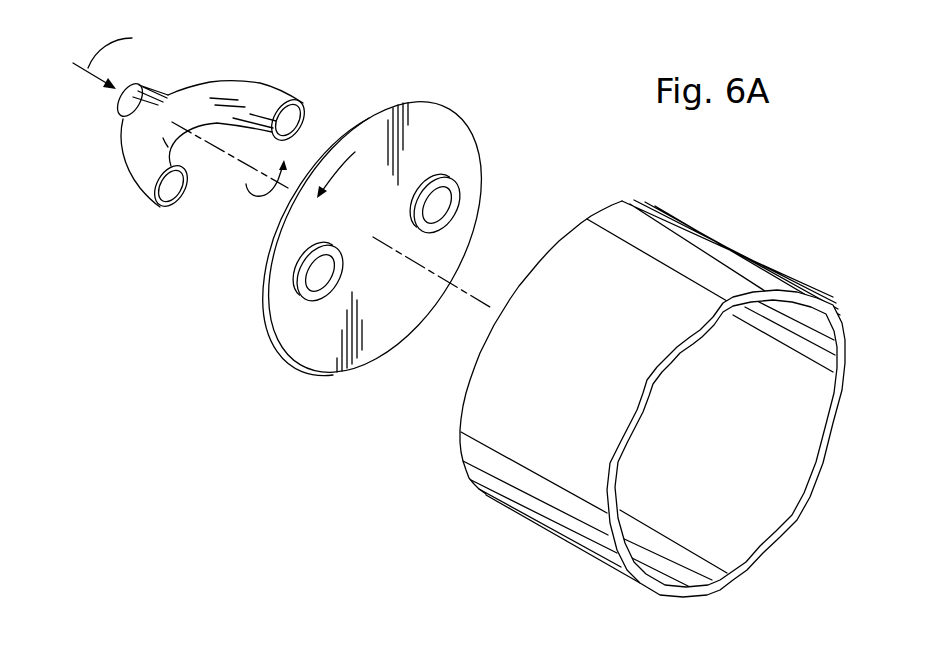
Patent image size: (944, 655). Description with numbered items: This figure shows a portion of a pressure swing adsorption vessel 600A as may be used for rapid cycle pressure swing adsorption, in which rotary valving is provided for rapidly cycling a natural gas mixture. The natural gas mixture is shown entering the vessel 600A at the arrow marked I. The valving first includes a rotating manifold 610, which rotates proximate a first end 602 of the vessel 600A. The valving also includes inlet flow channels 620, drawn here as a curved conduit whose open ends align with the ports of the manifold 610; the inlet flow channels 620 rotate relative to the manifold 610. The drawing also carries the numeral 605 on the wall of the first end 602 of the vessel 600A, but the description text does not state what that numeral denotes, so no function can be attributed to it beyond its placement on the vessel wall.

The pressure swing adsorption vessel 600A is at (180, 412).
The inlet flow channels 620 is at (124, 160).
The rotating manifold 610 is at (268, 292).
The first end 602 is at (461, 395).
The housing wall ridges 605 is at (537, 530).